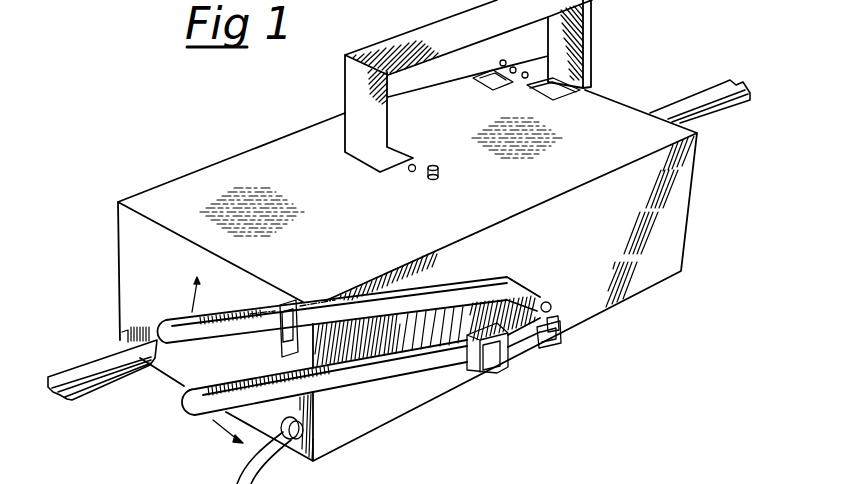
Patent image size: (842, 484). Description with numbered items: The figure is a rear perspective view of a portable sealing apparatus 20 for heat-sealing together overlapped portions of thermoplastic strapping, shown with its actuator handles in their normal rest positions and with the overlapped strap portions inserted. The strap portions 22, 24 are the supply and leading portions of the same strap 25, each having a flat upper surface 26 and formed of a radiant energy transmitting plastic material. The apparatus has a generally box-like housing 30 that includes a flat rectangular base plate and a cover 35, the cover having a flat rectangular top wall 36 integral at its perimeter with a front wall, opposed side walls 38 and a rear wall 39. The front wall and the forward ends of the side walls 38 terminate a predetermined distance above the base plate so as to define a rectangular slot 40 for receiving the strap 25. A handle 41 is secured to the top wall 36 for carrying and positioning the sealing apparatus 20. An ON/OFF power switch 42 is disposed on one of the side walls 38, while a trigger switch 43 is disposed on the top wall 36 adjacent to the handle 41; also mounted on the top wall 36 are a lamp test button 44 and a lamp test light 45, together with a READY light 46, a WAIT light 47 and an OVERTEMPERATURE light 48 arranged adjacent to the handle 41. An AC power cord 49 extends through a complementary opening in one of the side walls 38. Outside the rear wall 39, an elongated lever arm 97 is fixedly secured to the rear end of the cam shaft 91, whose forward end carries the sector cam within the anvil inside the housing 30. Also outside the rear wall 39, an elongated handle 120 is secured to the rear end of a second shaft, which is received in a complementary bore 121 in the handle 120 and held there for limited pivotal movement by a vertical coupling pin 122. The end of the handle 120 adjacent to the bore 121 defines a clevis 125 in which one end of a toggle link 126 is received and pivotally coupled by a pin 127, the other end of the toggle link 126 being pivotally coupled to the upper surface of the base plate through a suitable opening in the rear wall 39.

The sealing apparatus 20 is at (229, 108).
The strap portion 22 is at (703, 80).
The strap portion 24 is at (100, 394).
The strap 25 is at (57, 369).
The upper surface 26 is at (680, 107).
The housing 30 is at (165, 178).
The cover 35 is at (693, 201).
The top wall 36 is at (230, 166).
The side walls 38 is at (115, 245).
The rear wall 39 is at (660, 282).
The slot 40 is at (115, 334).
The handle 41 is at (408, 37).
The ON/OFF power switch 42 is at (280, 345).
The trigger switch 43 is at (483, 84).
The lamp test button 44 is at (431, 180).
The lamp test light 45 is at (408, 172).
The READY light 46 is at (502, 59).
The WAIT light 47 is at (515, 67).
The OVERTEMPERATURE light 48 is at (529, 73).
The AC power cord 49 is at (240, 478).
The cam shaft 91 is at (547, 301).
The lever arm 97 is at (470, 292).
The handle 120 is at (430, 380).
The bore 121 is at (490, 368).
The coupling pin 122 is at (480, 330).
The clevis 125 is at (556, 346).
The toggle link 126 is at (562, 332).
The pin 127 is at (560, 312).